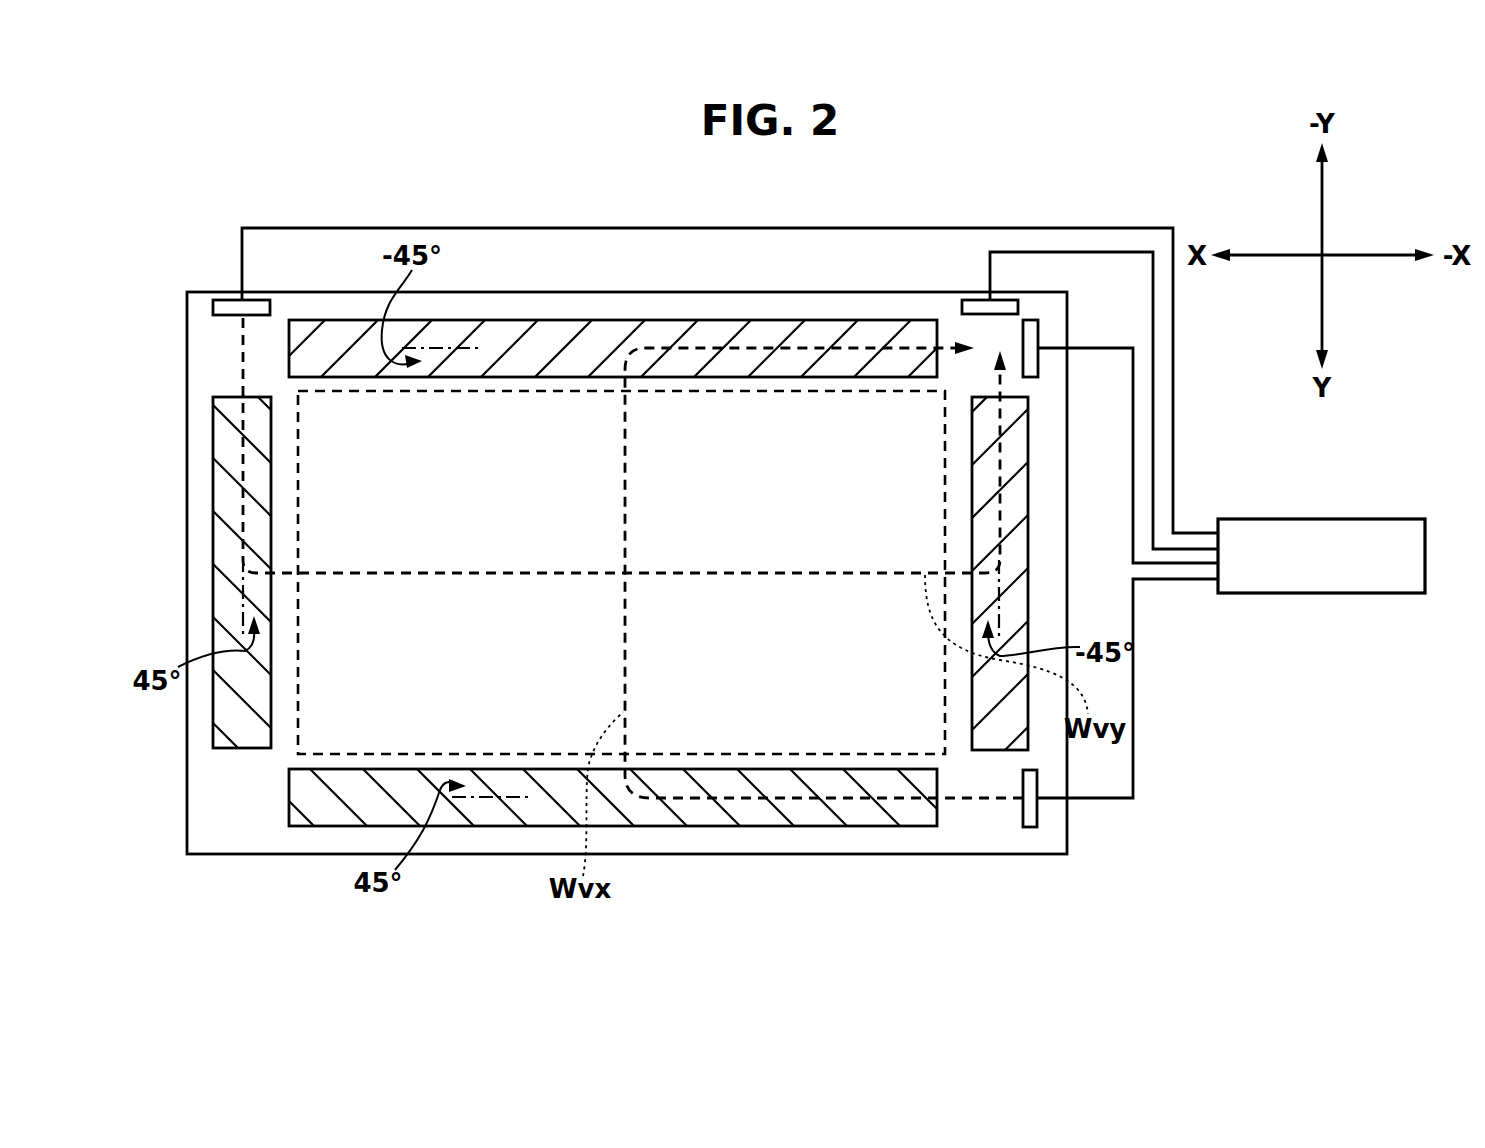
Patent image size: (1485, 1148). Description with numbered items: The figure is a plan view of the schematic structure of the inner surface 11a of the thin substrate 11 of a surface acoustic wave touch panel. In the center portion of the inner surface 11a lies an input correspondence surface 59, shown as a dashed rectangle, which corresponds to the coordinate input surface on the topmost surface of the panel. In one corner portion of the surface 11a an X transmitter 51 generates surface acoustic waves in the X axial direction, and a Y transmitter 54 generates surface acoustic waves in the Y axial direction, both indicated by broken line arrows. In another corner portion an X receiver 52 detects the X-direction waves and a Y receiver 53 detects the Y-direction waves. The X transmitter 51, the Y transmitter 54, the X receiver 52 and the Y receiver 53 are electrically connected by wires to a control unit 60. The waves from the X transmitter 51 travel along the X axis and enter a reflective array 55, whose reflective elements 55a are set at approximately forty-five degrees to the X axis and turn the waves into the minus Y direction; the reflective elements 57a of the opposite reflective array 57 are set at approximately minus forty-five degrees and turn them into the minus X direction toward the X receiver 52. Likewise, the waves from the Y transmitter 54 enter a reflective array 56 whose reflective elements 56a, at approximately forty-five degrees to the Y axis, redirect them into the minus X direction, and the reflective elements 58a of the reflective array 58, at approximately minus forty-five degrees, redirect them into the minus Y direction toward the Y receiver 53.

The thin substrate 11 is at (188, 768).
The inner surface 11a is at (206, 808).
The X transmitter 51 is at (1028, 828).
The X receiver 52 is at (1040, 363).
The Y receiver 53 is at (1015, 308).
The Y transmitter 54 is at (215, 307).
The reflective array 55 is at (660, 827).
The reflective element 55a is at (505, 823).
The reflective array 56 is at (212, 724).
The reflective element 56a is at (232, 573).
The reflective array 57 is at (562, 319).
The reflective element 57a is at (470, 335).
The reflective array 58 is at (1030, 481).
The reflective element 58a is at (1010, 590).
The input correspondence surface 59 is at (352, 391).
The control unit 60 is at (1305, 594).